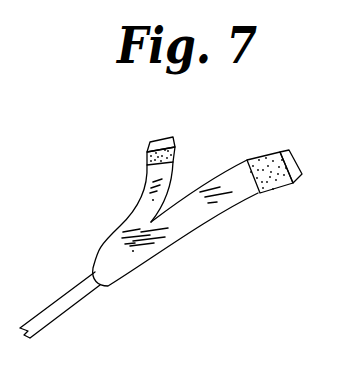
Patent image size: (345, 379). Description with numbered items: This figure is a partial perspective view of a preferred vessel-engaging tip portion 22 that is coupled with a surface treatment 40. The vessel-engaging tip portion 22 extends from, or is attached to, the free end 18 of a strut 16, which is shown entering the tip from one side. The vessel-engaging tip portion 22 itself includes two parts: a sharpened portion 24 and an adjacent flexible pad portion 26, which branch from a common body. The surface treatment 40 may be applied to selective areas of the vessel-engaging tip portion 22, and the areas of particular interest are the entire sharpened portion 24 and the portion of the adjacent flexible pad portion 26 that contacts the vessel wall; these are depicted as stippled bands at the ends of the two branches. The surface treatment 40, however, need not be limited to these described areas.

The strut 16 is at (80, 300).
The free end 18 is at (204, 258).
The vessel-engaging tip portion 22 is at (89, 246).
The sharpened portion 24 is at (142, 199).
The flexible pad portion 26 is at (205, 184).
The surface treatment 40 is at (148, 153).